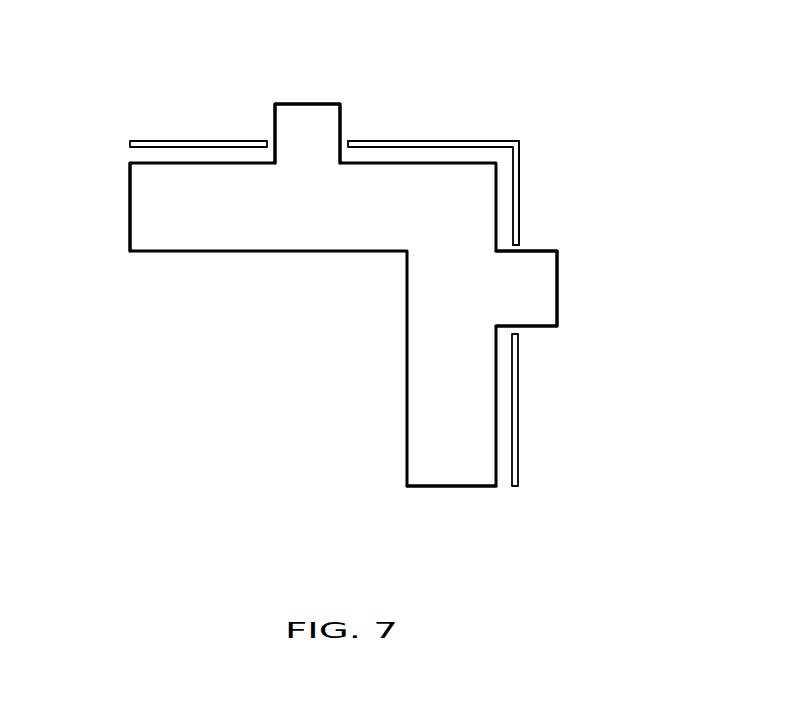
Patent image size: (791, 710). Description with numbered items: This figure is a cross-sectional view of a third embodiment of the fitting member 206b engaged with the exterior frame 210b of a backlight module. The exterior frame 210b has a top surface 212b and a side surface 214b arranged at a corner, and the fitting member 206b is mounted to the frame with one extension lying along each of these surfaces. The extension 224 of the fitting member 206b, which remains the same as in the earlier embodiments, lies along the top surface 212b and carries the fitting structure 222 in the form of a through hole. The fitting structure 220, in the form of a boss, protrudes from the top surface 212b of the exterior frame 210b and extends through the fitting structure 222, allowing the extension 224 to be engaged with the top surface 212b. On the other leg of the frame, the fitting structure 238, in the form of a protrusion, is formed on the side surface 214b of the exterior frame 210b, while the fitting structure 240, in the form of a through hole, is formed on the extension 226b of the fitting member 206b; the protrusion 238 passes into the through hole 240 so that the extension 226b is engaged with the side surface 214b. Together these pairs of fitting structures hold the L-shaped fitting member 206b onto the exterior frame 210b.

The fitting member 206b is at (558, 139).
The exterior frame 210b is at (283, 356).
The top surface 212b is at (153, 203).
The side surface 214b is at (455, 472).
The fitting structure 220 is at (297, 115).
The fitting structure 222 is at (348, 132).
The extension 224 is at (187, 140).
The extension 226b is at (518, 422).
The fitting structure 238 is at (542, 292).
The fitting structure 240 is at (524, 246).